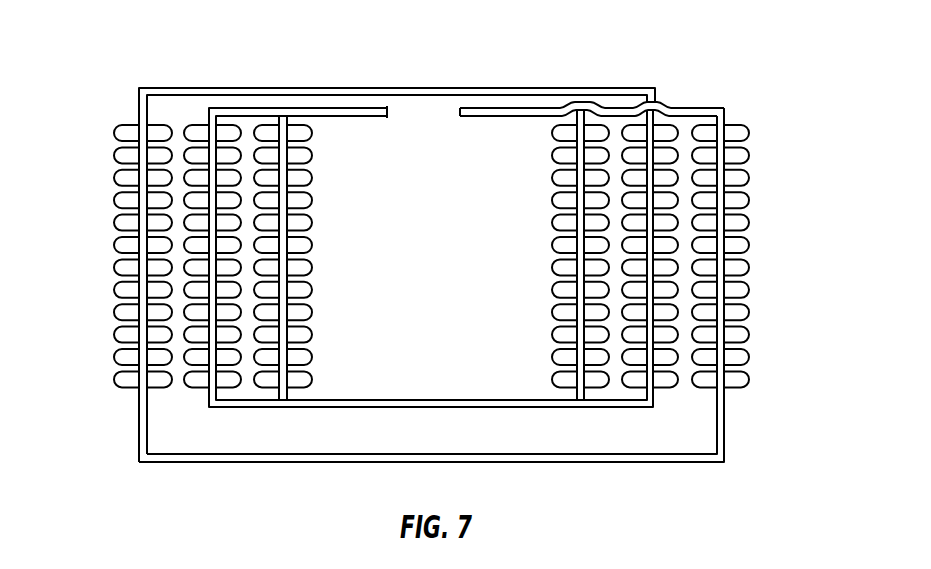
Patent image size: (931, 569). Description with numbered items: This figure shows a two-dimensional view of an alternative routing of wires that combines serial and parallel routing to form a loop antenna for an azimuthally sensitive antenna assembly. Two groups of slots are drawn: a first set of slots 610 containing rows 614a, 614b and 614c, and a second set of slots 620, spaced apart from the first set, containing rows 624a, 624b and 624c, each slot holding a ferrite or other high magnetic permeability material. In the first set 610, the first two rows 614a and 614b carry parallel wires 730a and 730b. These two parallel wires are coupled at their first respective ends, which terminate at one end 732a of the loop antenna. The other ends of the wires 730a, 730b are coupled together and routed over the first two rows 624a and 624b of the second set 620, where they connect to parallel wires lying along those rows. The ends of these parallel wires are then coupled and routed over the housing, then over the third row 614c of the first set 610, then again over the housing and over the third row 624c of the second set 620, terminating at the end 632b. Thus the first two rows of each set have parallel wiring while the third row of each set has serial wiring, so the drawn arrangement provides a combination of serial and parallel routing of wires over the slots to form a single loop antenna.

The first set of slots 610 is at (95, 222).
The second set of slots 620 is at (773, 218).
The first row of slots of the first set 614a is at (273, 415).
The second row of slots of the first set 614b is at (210, 416).
The third row of slots of the first set 614c is at (127, 402).
The first row of slots of the second set 624a is at (537, 359).
The second row of slots of the second set 624b is at (668, 398).
The third row of slots of the second set 624c is at (742, 397).
The parallel wire 730a is at (287, 247).
The parallel wire 730b is at (227, 107).
The end of the loop antenna 732a is at (386, 106).
The end of the wire 632b is at (461, 106).